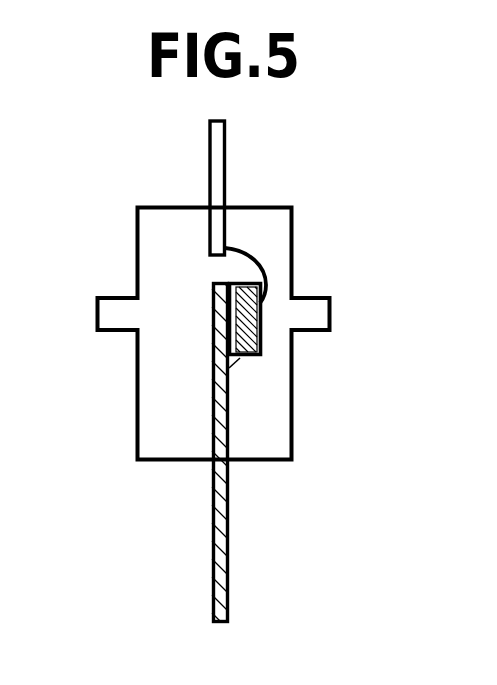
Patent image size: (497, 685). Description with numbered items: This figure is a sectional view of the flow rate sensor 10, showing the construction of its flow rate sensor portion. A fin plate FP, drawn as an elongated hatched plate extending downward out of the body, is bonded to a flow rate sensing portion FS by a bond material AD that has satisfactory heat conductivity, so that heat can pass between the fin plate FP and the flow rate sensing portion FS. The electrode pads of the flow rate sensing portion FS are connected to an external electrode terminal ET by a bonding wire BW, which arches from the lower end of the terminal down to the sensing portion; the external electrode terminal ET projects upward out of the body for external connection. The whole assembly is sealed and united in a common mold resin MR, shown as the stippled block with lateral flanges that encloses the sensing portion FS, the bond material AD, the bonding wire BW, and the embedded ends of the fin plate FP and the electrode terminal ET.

The flow rate sensor 10 is at (348, 160).
The mold resin MR is at (152, 393).
The external electrode terminal ET is at (225, 153).
The bonding wire BW is at (263, 266).
The fin plate FP is at (228, 566).
The flow rate sensing portion FS is at (259, 330).
The bond material AD is at (240, 358).